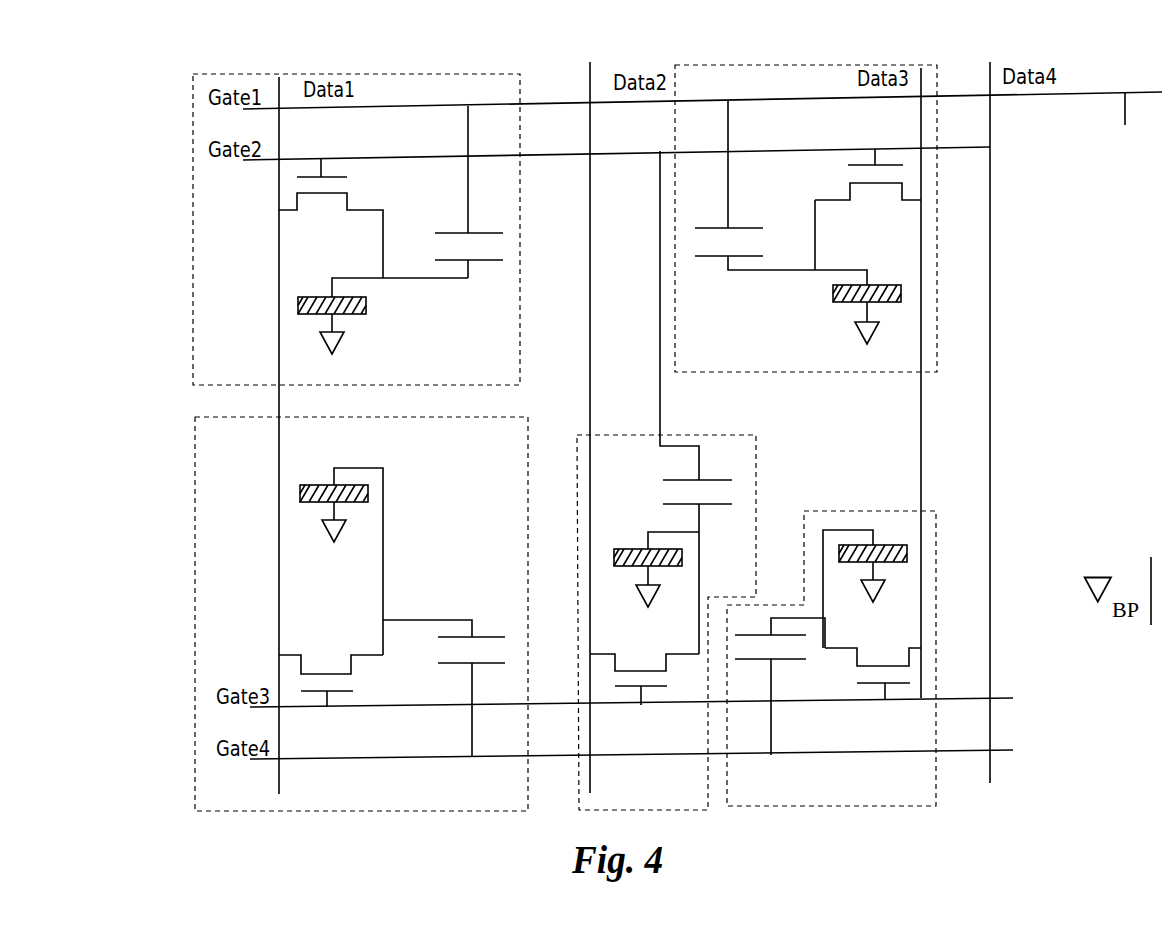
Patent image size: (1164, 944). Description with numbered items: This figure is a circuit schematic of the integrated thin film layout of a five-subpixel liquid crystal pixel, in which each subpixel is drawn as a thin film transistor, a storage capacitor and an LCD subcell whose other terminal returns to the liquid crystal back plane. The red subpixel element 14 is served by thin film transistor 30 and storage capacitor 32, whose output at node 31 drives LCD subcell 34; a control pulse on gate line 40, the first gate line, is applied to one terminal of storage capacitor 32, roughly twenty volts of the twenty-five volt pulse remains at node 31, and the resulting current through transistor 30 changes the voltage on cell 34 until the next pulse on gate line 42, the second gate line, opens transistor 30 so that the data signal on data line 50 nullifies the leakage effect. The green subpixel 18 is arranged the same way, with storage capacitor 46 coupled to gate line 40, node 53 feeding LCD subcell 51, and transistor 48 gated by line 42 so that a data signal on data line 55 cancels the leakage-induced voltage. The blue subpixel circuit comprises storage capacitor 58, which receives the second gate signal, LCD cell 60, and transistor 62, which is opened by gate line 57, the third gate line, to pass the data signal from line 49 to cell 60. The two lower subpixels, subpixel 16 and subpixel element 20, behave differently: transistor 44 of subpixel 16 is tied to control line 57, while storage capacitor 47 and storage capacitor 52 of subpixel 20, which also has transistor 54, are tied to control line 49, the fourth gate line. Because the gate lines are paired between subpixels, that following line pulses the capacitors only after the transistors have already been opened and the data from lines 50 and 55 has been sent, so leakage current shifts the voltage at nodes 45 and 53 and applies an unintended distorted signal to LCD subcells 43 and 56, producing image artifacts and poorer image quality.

The red subpixel element 14 is at (190, 243).
The subpixel 16 is at (438, 813).
The green subpixel 18 is at (935, 67).
The subpixel element 20 is at (938, 800).
The thin film transistor 30 is at (295, 178).
The node 31 is at (387, 283).
The storage capacitor 32 is at (490, 225).
The LCD subcell 34 is at (370, 305).
The gate line 40 is at (227, 110).
The gate line 42 is at (223, 161).
The LCD subcell 43 is at (372, 491).
The thin film transistor 44 is at (348, 683).
The node 45 is at (392, 618).
The storage capacitor 46 is at (727, 233).
The storage capacitor 47 is at (485, 631).
The thin film transistor 48 is at (847, 182).
The gate line 49 is at (587, 60).
The data line 50 is at (277, 74).
The LCD subcell 51 is at (823, 295).
The storage capacitor 52 is at (747, 640).
The node 53 is at (817, 268).
The thin film transistor 54 is at (900, 647).
The data line 55 is at (920, 95).
The LCD subcell 56 is at (898, 544).
The gate line 57 is at (238, 713).
The storage capacitor 58 is at (720, 490).
The LCD subcell 60 is at (678, 557).
The thin film transistor 62 is at (623, 654).